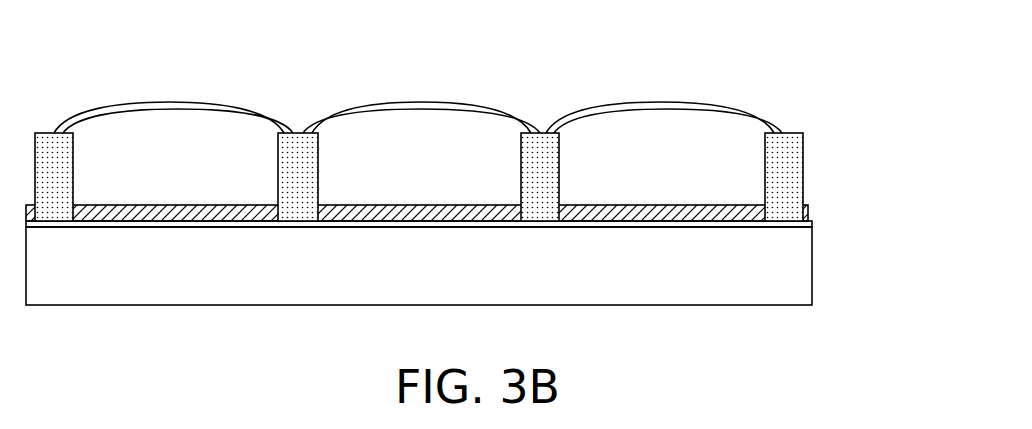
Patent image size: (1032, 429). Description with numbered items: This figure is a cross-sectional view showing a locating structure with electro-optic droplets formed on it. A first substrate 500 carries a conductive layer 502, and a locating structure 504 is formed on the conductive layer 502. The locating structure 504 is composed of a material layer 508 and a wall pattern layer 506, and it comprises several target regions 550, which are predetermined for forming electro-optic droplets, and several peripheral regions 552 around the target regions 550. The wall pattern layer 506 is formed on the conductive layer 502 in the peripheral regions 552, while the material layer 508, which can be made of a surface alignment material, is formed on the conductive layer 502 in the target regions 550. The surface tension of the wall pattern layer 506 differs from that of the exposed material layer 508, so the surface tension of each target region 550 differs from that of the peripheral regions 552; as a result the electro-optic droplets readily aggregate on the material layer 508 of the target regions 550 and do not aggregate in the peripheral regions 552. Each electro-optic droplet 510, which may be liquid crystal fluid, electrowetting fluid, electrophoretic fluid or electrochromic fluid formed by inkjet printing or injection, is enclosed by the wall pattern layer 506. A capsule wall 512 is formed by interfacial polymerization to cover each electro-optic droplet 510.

The first substrate 500 is at (797, 290).
The conductive layer 502 is at (812, 228).
The locating structure 504 is at (470, 171).
The wall pattern layer 506 is at (797, 153).
The material layer 508 is at (811, 213).
The electro-optic droplet 510 is at (645, 150).
The capsule wall 512 is at (727, 110).
The target region 550 is at (278, 237).
The peripheral region 552 is at (73, 237).